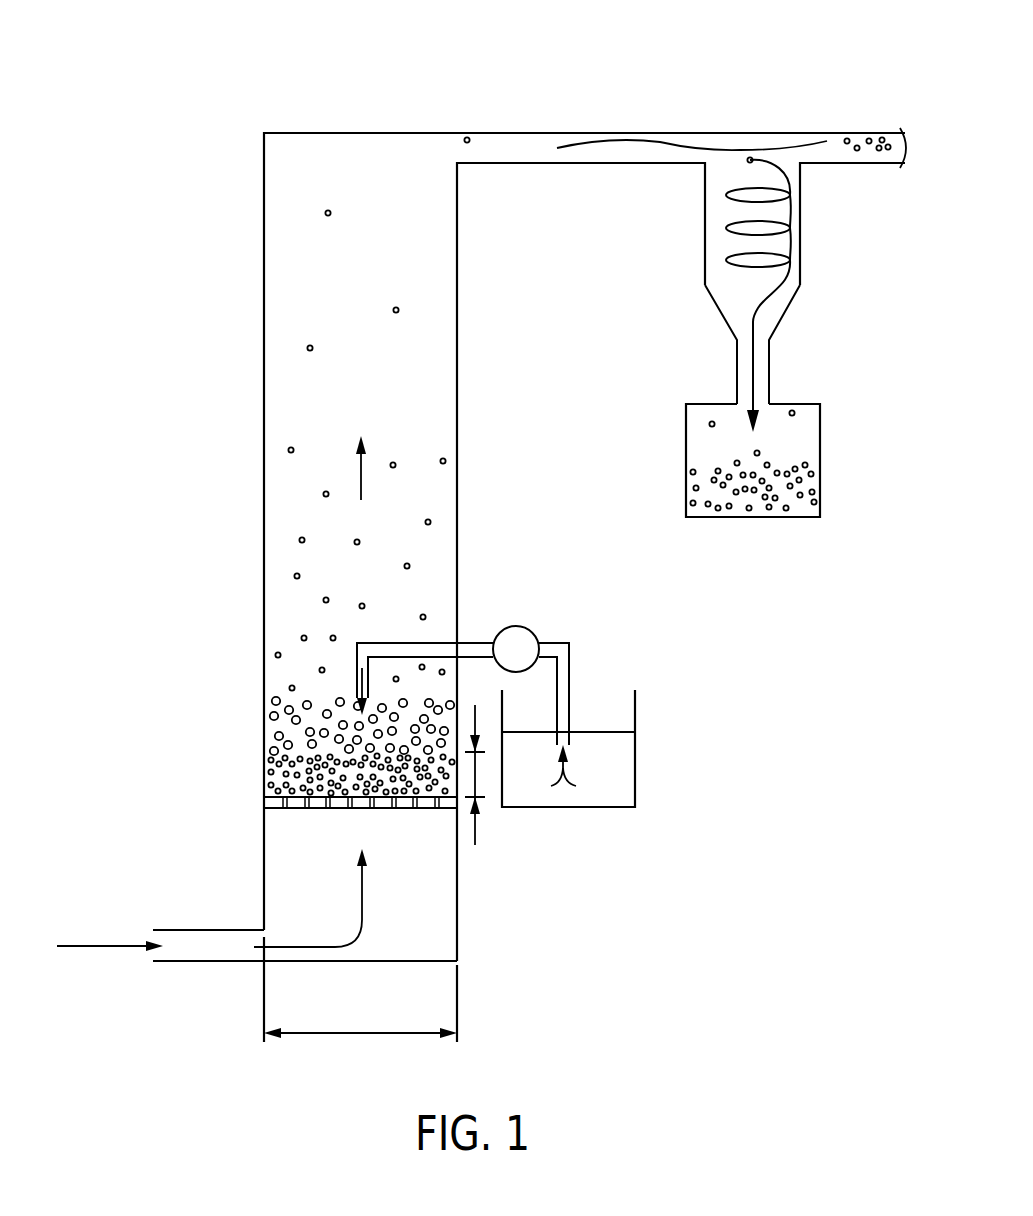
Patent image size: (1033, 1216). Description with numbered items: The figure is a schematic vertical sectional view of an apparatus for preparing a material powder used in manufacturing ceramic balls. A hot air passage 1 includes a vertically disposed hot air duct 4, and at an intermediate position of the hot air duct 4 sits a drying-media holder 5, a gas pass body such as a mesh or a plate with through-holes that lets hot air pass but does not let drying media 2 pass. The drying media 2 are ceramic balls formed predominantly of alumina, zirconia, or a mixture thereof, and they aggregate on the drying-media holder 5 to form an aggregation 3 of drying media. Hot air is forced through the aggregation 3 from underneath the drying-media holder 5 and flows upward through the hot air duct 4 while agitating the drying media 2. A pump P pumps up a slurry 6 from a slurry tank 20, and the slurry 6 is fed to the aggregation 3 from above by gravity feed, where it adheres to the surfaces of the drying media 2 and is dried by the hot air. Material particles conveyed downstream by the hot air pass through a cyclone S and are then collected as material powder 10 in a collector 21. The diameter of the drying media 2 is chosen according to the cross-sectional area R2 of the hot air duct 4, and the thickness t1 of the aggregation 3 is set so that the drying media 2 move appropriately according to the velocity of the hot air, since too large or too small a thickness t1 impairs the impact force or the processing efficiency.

The hot air passage 1 is at (257, 80).
The drying media 2 is at (272, 762).
The aggregation of drying media 3 is at (258, 753).
The hot air duct 4 is at (250, 590).
The drying-media holder 5 is at (283, 820).
The slurry 6 is at (610, 798).
The material powder 10 is at (760, 518).
The slurry tank 20 is at (636, 778).
The collector 21 is at (686, 452).
The cyclone S is at (800, 226).
The pump P is at (466, 706).
The thickness of the aggregation of drying media t1 is at (475, 830).
The cross-sectional area of the hot air duct R2 is at (358, 1032).